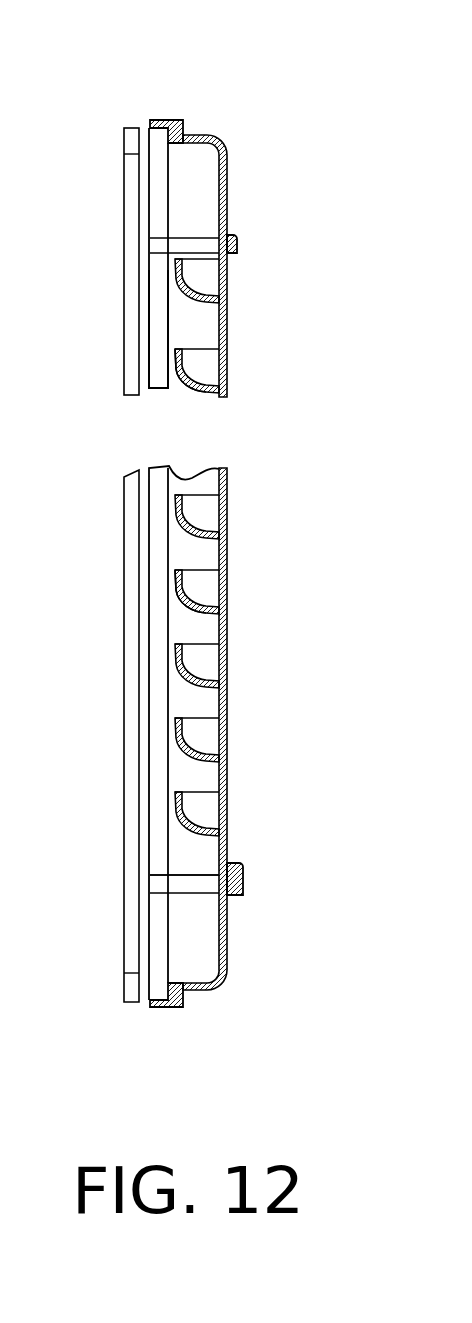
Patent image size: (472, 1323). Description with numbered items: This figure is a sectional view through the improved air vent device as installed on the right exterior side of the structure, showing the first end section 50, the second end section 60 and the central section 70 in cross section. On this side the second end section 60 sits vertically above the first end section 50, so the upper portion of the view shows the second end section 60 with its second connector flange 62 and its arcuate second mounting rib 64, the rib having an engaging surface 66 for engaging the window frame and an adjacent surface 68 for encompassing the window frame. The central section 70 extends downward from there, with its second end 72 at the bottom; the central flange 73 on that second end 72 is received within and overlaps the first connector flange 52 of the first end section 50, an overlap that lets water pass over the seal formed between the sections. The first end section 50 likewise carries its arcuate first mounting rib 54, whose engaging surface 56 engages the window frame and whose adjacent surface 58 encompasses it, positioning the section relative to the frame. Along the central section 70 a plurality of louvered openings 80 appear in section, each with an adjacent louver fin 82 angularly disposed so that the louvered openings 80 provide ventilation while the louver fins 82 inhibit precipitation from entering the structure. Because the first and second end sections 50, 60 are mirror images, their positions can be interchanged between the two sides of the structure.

The first end section 50 is at (197, 933).
The first connector flange 52 is at (160, 882).
The first mounting rib 54 is at (160, 1007).
The engaging surface 56 is at (170, 990).
The adjacent surface 58 is at (185, 995).
The second end section 60 is at (158, 183).
The second connector flange 62 is at (233, 244).
The second mounting rib 64 is at (187, 118).
The engaging surface 66 is at (166, 120).
The adjacent surface 68 is at (150, 127).
The central section 70 is at (158, 273).
The second end 72 is at (193, 883).
The central flange 73 is at (187, 880).
The louvered openings 80 is at (195, 362).
The louver fins 82 is at (177, 363).